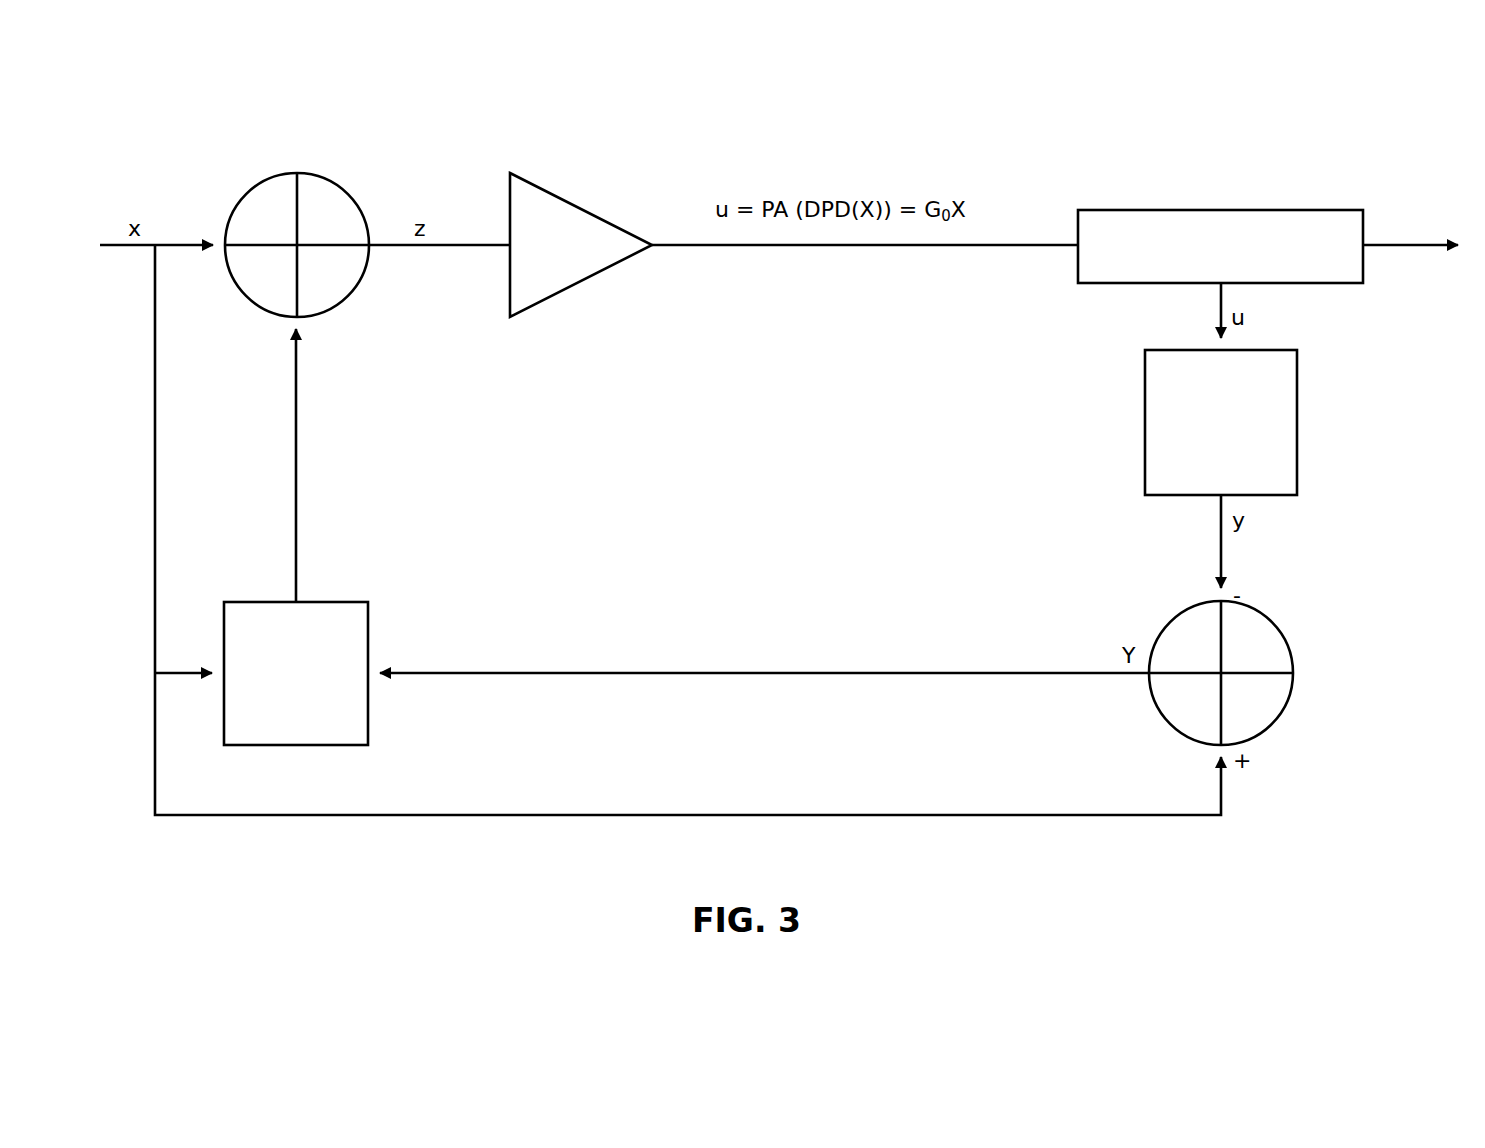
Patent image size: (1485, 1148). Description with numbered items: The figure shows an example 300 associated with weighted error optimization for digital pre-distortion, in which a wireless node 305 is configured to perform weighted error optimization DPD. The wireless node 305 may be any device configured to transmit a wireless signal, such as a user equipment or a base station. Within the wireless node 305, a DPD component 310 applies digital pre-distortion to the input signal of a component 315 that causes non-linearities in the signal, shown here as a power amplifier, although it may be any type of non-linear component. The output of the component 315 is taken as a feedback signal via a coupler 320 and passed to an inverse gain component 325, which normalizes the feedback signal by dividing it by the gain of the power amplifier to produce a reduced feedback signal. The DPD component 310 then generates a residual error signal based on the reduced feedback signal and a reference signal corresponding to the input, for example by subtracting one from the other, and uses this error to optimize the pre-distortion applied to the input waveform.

The example 300 is at (228, 92).
The wireless node 305 is at (222, 163).
The DPD component 310 is at (296, 673).
The component causing non-linearities 315 is at (510, 173).
The coupler 320 is at (1220, 210).
The inverse gain component 325 is at (1145, 422).